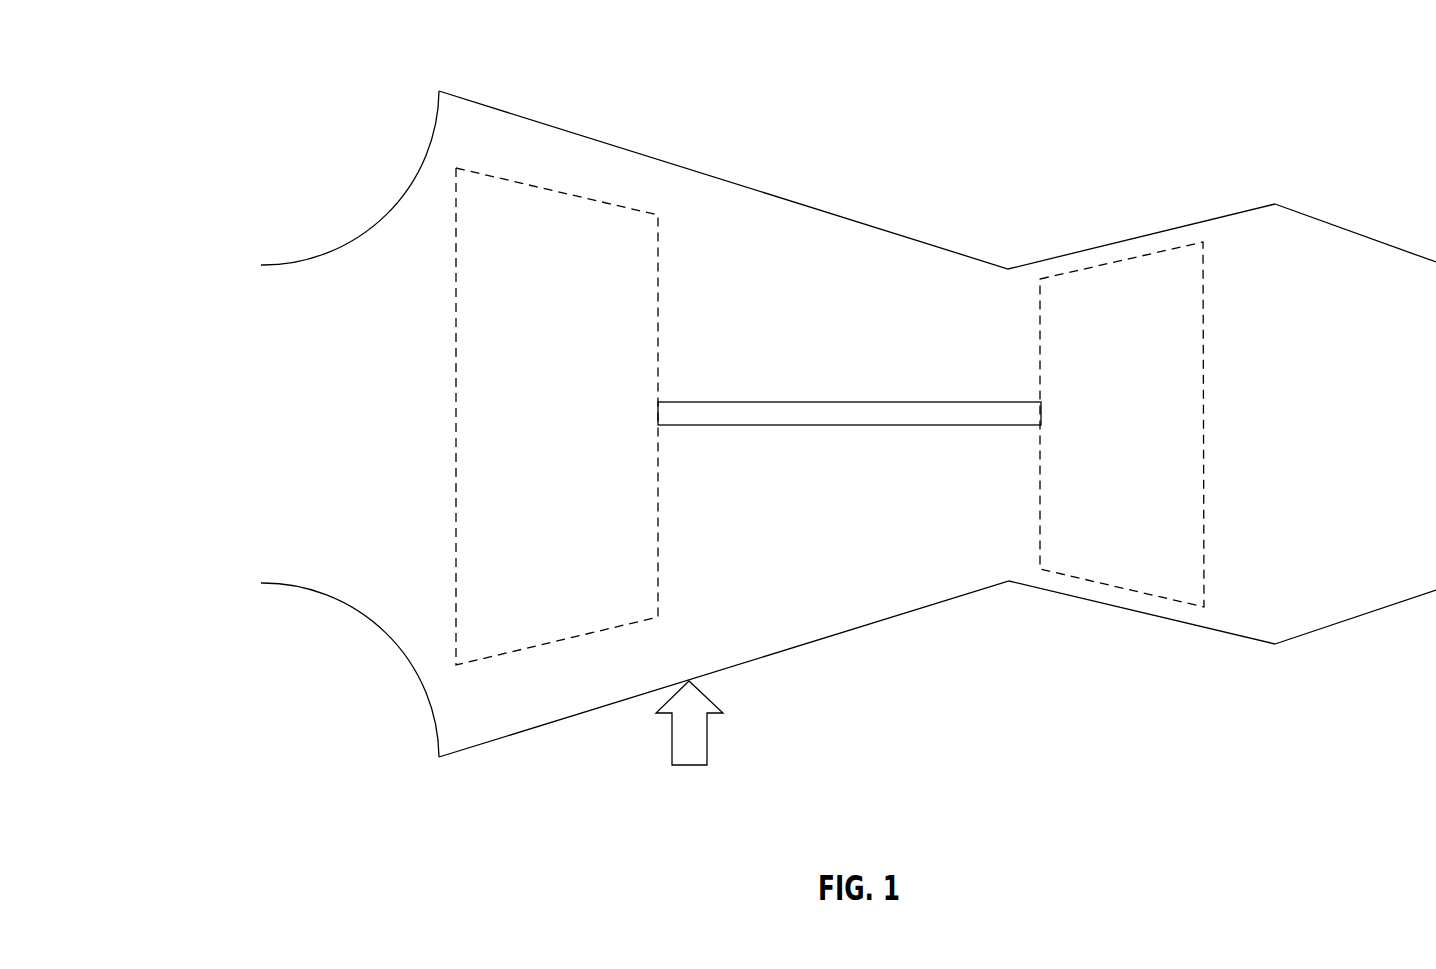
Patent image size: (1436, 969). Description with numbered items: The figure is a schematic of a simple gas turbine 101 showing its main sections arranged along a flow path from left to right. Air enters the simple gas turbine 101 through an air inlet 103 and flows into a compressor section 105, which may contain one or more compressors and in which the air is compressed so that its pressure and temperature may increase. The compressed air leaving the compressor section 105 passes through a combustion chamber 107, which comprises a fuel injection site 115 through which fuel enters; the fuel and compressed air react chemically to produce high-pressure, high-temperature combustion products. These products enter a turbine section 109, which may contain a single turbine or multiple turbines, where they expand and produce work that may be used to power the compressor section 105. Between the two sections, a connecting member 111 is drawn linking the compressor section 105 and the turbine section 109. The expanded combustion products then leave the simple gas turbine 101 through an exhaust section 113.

The simple gas turbine 101 is at (190, 82).
The air inlet 103 is at (212, 420).
The compressor section 105 is at (548, 228).
The combustion chamber 107 is at (883, 572).
The turbine section 109 is at (1113, 289).
The connecting member 111 is at (802, 414).
The exhaust section 113 is at (1309, 344).
The fuel injection site 115 is at (695, 773).